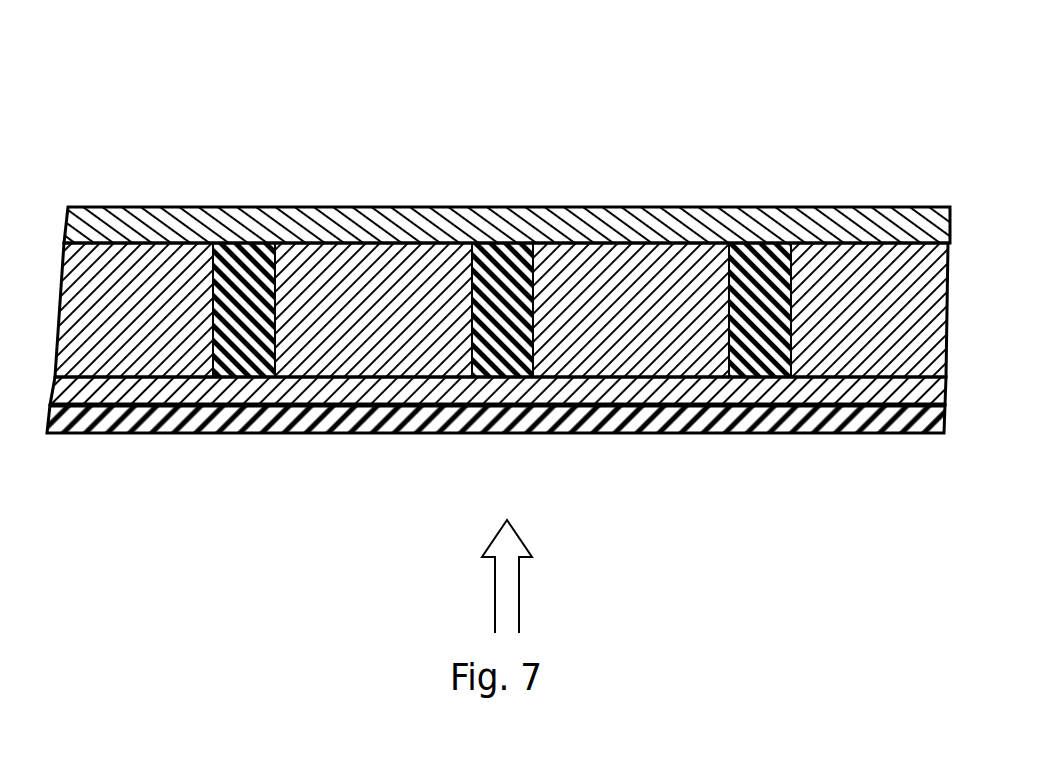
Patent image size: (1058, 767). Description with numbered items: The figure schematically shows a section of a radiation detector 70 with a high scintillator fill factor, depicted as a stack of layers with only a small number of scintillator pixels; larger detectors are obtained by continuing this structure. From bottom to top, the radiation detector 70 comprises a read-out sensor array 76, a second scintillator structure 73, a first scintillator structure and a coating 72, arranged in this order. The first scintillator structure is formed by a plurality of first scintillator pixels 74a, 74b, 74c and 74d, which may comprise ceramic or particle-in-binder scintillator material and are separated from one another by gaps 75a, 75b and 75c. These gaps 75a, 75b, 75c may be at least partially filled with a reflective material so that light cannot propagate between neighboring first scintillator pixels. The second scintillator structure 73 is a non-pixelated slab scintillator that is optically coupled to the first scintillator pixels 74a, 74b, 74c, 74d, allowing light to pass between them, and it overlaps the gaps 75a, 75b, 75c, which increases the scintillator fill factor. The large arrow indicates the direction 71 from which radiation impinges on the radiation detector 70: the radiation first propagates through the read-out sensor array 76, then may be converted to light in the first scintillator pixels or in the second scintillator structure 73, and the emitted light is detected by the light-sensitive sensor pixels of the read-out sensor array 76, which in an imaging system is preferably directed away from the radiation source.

The radiation detector 70 is at (152, 118).
The direction 71 is at (525, 578).
The coating 72 is at (287, 224).
The second scintillator structure 73 is at (326, 389).
The first scintillator pixel 74a is at (144, 270).
The first scintillator pixel 74b is at (389, 270).
The first scintillator pixel 74c is at (634, 272).
The first scintillator pixel 74d is at (853, 272).
The gap 75a is at (241, 362).
The gap 75b is at (502, 362).
The gap 75c is at (763, 362).
The read-out sensor array 76 is at (873, 417).